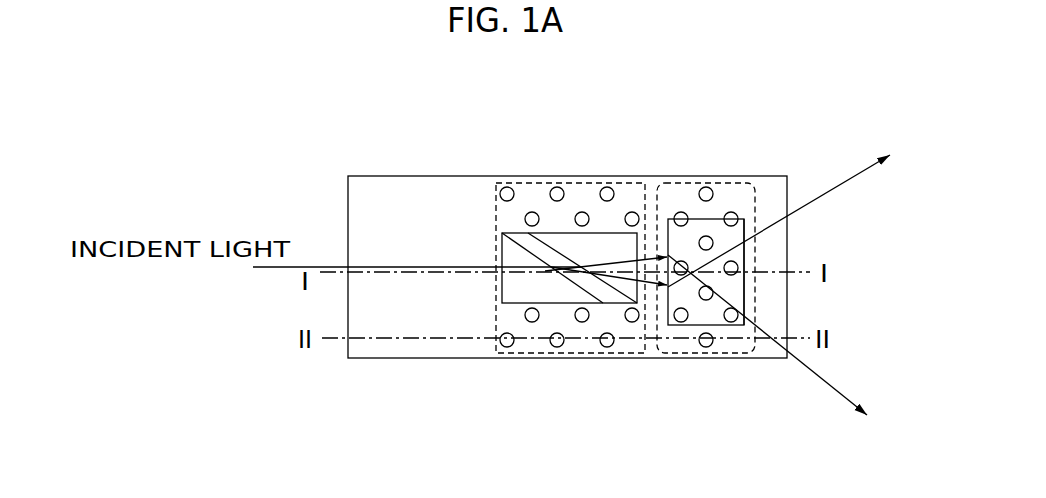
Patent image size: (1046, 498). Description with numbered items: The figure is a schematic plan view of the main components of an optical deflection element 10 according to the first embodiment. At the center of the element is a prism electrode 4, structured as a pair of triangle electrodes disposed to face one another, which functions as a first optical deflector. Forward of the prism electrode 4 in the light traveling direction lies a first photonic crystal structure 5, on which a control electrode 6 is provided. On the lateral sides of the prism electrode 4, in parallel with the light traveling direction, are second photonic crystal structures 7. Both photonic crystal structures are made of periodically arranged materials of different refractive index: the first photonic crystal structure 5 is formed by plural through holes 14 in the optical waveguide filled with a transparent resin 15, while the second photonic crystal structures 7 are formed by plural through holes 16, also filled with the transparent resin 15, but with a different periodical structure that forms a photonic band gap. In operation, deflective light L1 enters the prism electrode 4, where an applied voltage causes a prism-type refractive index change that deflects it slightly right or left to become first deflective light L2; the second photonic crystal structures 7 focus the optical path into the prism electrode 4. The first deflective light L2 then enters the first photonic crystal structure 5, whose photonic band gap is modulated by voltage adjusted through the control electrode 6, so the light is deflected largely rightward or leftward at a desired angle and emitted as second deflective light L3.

The optical deflection element 10 is at (353, 151).
The prism electrode 4 is at (565, 245).
The first photonic crystal structure 5 is at (722, 181).
The control electrode 6 is at (748, 296).
The second photonic crystal structures 7 is at (532, 181).
The through holes 14 is at (742, 268).
The transparent resin 15 is at (505, 186).
The through holes 16 is at (562, 190).
The deflective light L1 is at (318, 265).
The first deflective light L2 is at (617, 373).
The second deflective light L3 is at (838, 388).